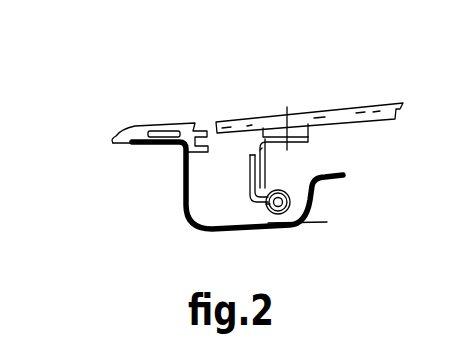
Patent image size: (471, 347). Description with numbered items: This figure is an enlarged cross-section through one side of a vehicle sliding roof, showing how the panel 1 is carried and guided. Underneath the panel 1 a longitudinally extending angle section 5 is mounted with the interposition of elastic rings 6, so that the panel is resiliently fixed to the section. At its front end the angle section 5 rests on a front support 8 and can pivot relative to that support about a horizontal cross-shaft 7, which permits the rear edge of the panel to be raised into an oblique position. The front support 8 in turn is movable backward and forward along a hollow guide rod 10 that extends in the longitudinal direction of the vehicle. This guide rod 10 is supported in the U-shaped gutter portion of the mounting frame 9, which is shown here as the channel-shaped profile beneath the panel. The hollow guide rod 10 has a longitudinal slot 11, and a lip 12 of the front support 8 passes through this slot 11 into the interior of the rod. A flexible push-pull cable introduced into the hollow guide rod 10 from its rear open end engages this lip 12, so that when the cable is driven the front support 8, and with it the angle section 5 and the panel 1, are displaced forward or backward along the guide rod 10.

The panel 1 is at (322, 113).
The angle section 5 is at (262, 148).
The elastic rings 6 is at (268, 127).
The horizontal cross-shaft 7 is at (243, 172).
The front support 8 is at (258, 202).
The mounting frame 9 is at (181, 179).
The hollow guide rod 10 is at (290, 193).
The longitudinal slot 11 is at (265, 204).
The lip 12 is at (279, 214).